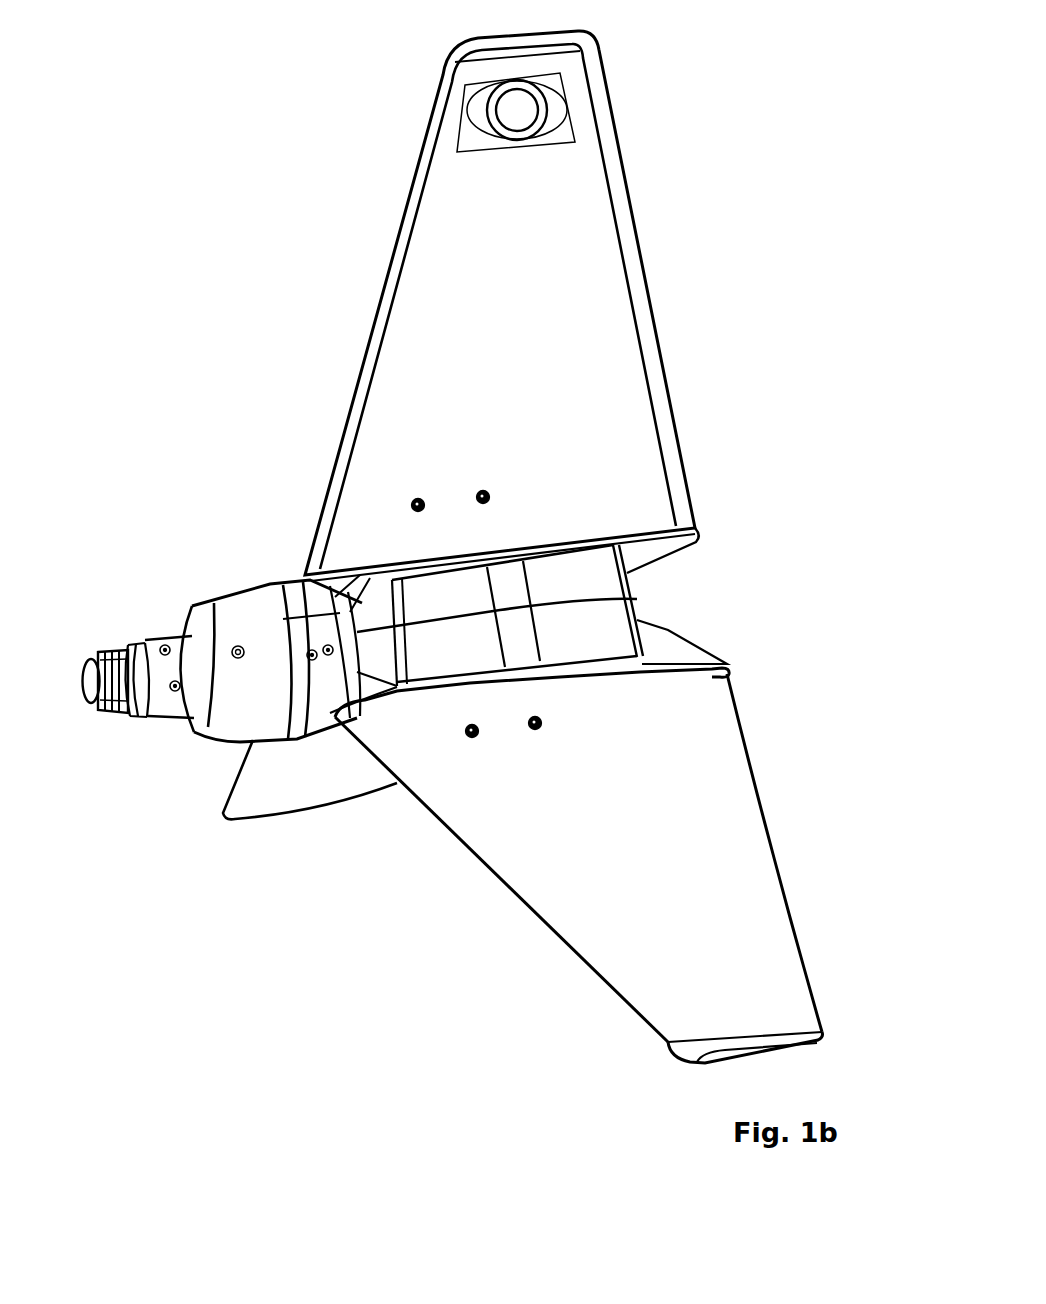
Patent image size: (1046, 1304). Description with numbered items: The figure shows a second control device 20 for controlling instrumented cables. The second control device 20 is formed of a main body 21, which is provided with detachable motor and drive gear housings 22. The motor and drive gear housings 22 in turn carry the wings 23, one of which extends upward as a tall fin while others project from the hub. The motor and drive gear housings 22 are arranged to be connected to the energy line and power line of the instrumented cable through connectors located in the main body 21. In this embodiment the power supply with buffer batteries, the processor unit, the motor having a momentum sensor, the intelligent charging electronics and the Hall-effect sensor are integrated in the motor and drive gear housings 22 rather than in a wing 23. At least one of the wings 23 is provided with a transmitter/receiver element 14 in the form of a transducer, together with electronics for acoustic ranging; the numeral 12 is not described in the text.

The wing 12 is at (282, 778).
The transmitter/receiver element 14 is at (577, 113).
The second control device 20 is at (253, 277).
The main body 21 is at (223, 588).
The motor and drive gear housings 22 is at (581, 629).
The wings 23 is at (550, 250).